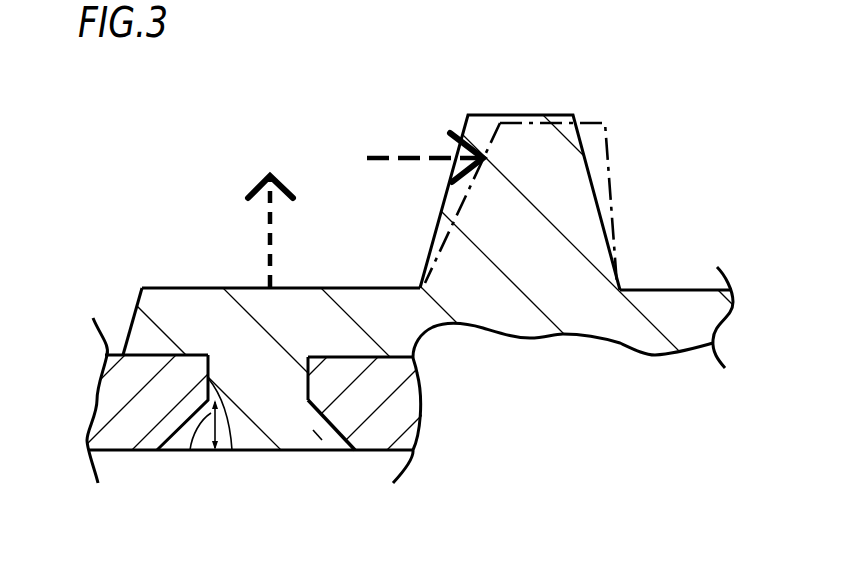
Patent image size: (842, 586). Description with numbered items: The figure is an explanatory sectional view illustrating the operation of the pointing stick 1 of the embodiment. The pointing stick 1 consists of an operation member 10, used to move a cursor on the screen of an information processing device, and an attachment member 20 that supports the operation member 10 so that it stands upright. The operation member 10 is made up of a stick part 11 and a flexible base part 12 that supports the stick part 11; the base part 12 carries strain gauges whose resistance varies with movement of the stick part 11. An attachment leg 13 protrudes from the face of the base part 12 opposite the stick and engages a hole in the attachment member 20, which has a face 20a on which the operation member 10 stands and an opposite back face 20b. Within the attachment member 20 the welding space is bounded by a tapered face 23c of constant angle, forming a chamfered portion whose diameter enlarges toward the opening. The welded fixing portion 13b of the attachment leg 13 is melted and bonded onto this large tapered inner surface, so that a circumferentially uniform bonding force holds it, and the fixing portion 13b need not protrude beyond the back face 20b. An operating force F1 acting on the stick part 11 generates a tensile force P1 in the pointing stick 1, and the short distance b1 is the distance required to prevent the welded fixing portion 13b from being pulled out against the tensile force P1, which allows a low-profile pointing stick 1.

The pointing stick 1 is at (310, 97).
The operation member 10 is at (563, 103).
The stick part 11 is at (493, 114).
The flexible base part 12 is at (342, 283).
The attachment leg 13 is at (273, 387).
The welded fixing portion 13b is at (313, 430).
The attachment member 20 is at (97, 410).
The face provided with the operation member 20a is at (115, 354).
The back face 20b is at (115, 455).
The tapered face 23c is at (346, 440).
The distance b1 is at (185, 455).
The tensile force P1 is at (257, 223).
The operating force F1 is at (425, 151).